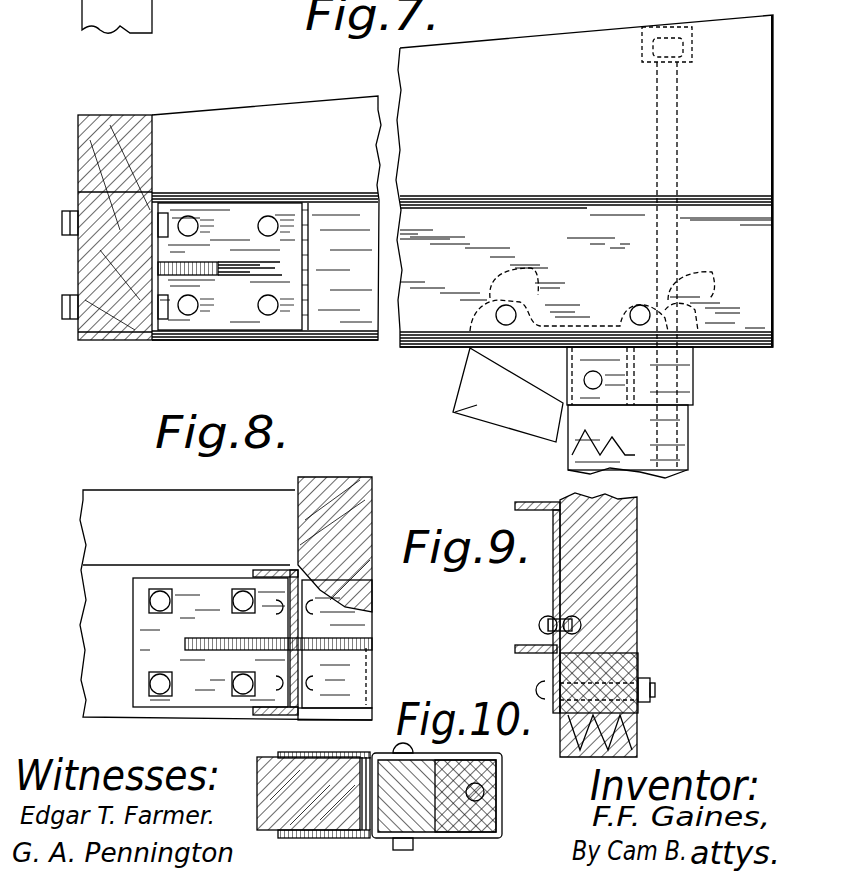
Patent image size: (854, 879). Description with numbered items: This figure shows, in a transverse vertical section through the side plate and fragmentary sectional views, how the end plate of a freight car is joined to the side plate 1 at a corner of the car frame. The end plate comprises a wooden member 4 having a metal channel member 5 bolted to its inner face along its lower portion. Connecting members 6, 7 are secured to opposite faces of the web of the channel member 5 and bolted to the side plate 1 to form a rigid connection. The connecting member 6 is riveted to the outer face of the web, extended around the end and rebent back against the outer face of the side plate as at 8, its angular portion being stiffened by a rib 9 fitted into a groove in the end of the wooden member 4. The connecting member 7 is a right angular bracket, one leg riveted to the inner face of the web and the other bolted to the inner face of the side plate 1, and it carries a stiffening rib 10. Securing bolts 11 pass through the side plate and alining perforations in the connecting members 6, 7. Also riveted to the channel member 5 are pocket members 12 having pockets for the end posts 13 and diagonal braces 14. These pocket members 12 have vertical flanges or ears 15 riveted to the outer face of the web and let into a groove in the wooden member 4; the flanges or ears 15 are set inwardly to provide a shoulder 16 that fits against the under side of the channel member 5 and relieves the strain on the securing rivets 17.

In FIG. 7, the side plate 1 is at (100, 258).
In FIG. 8, the side plate 1 is at (107, 618).
In FIG. 7, the wooden member 4 is at (192, 138).
In FIG. 8, the wooden member 4 is at (352, 540).
In FIG. 9, the wooden member 4 is at (612, 604).
In FIG. 7, the channel member 5 is at (342, 212).
In FIG. 8, the channel member 5 is at (280, 570).
In FIG. 9, the channel member 5 is at (550, 580).
In FIG. 8, the connecting member 6 is at (342, 628).
In FIG. 7, the connecting member 7 is at (170, 205).
In FIG. 8, the connecting member 7 is at (162, 650).
In FIG. 7, the rebent portion 8 is at (303, 372).
In FIG. 7, the rib 9 is at (690, 500).
In FIG. 8, the rib 9 is at (348, 652).
In FIG. 7, the stiffening rib 10 is at (200, 270).
In FIG. 8, the stiffening rib 10 is at (235, 640).
In FIG. 7, the securing bolts 11 is at (62, 222).
In FIG. 8, the securing bolts 11 is at (243, 600).
In FIG. 7, the pocket members 12 is at (662, 382).
In FIG. 8, the pocket members 12 is at (335, 650).
In FIG. 9, the pocket members 12 is at (640, 668).
In FIG. 10, the pocket members 12 is at (312, 756).
In FIG. 7, the end posts 13 is at (592, 420).
In FIG. 9, the end posts 13 is at (636, 708).
In FIG. 10, the end posts 13 is at (470, 775).
In FIG. 7, the diagonal braces 14 is at (500, 394).
In FIG. 10, the diagonal braces 14 is at (300, 800).
In FIG. 7, the flanges or ears 15 is at (592, 299).
In FIG. 9, the flanges or ears 15 is at (570, 612).
In FIG. 9, the shoulder 16 is at (545, 650).
In FIG. 7, the securing rivets 17 is at (640, 318).
In FIG. 9, the securing rivets 17 is at (540, 618).